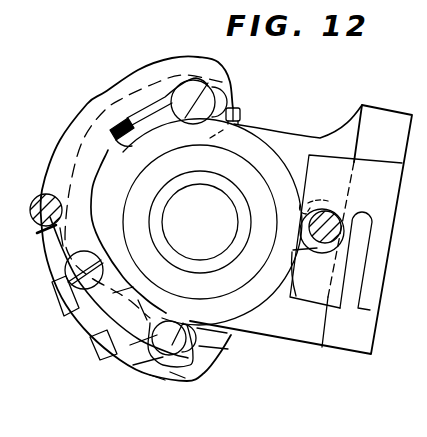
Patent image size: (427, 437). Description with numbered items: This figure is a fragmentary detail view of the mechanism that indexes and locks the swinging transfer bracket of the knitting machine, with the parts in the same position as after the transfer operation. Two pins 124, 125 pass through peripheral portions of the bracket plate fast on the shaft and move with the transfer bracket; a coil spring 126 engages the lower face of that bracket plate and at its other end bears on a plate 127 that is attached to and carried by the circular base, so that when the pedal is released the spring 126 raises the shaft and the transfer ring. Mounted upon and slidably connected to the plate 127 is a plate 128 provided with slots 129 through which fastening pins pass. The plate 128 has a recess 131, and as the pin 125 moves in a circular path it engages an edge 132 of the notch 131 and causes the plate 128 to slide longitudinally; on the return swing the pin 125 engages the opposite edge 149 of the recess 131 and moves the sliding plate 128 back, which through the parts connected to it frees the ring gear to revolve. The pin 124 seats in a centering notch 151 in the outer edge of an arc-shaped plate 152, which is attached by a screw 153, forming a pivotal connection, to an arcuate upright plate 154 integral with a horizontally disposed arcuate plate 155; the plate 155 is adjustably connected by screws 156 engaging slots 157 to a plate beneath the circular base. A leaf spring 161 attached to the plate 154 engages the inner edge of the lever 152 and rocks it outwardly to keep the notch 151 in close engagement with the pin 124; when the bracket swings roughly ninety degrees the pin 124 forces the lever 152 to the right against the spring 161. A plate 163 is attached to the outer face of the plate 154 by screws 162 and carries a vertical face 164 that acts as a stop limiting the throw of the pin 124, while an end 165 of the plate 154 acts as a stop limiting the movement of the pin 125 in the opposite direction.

The pin 124 is at (42, 216).
The pin 125 is at (340, 221).
The coil spring 126 is at (201, 183).
The plate 127 is at (301, 229).
The plate 128 is at (346, 231).
The slots 129 is at (365, 266).
The recess 131 is at (312, 253).
The edge 132 is at (303, 206).
The edge 149 is at (303, 272).
The centering notch 151 is at (62, 208).
The arc-shaped plate 152 is at (57, 162).
The screw 153 is at (114, 279).
The arcuate upright plate 154 is at (157, 374).
The arcuate plate 155 is at (206, 373).
The screws 156 is at (216, 90).
The slots 157 is at (217, 358).
The leaf spring 161 is at (132, 146).
The screws 162 is at (90, 345).
The plate 163 is at (132, 358).
The vertical face 164 is at (44, 238).
The end 165 is at (173, 382).